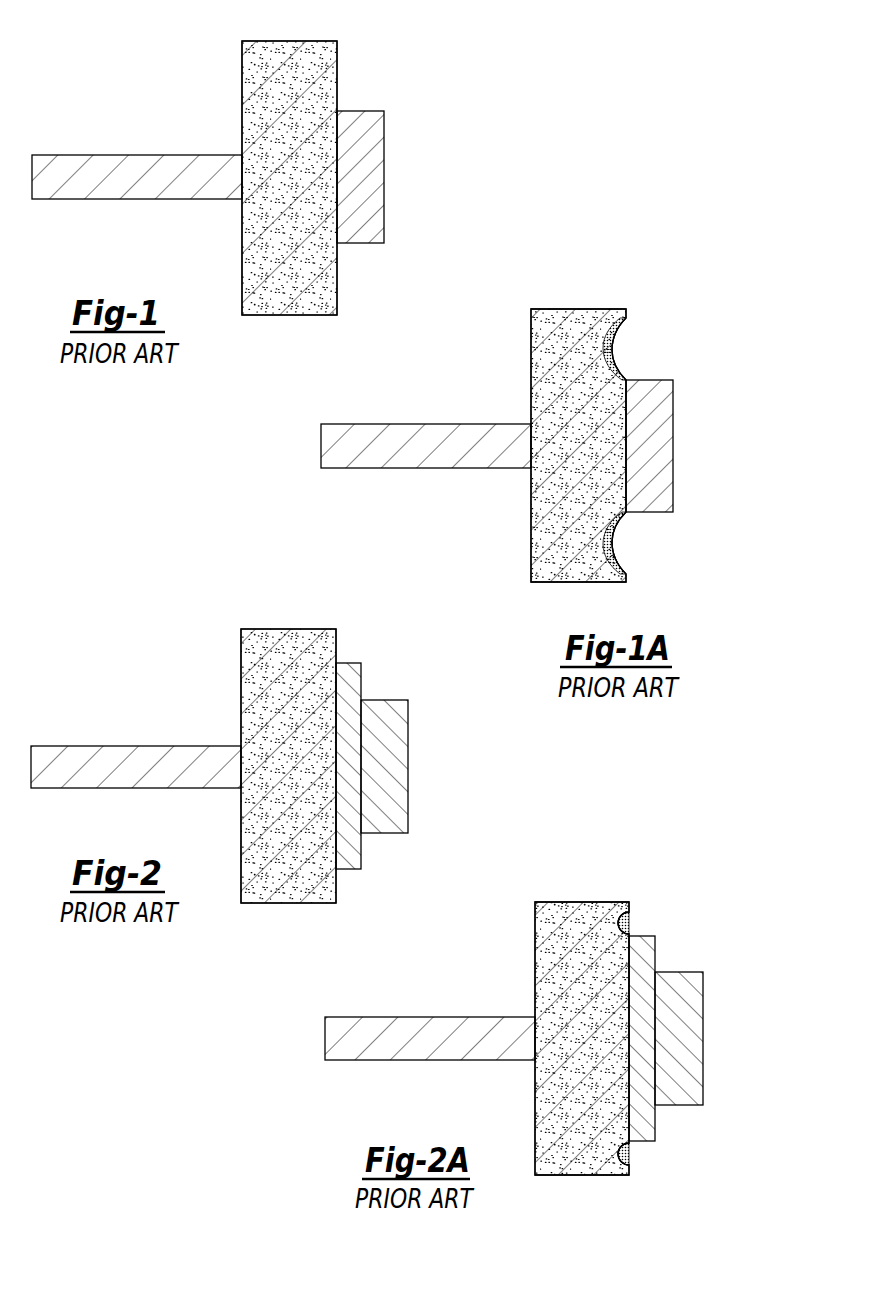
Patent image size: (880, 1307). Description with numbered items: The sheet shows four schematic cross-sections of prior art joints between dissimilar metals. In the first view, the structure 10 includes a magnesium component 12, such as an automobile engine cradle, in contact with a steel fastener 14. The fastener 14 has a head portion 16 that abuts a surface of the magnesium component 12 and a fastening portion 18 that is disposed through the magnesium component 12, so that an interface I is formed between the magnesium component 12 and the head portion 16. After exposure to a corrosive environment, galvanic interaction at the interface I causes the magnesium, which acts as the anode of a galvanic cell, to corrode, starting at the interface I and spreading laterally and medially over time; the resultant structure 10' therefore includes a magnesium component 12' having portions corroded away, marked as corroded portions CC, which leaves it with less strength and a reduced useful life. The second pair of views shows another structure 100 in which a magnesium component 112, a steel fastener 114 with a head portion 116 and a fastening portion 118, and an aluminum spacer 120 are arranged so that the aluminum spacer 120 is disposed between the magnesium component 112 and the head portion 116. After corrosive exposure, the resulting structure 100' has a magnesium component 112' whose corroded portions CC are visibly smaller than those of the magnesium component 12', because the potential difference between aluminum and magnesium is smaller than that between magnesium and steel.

In FIG. 1, the prior art structure 10 is at (250, 159).
In FIG. 1A, the resultant structure 10' is at (534, 429).
In FIG. 1, the magnesium component 12 is at (262, 178).
In FIG. 1A, the corroded magnesium component 12' is at (552, 445).
In FIG. 1, the steel fastener 14 is at (322, 178).
In FIG. 1A, the steel fastener 14 is at (612, 453).
In FIG. 1, the head portion 16 is at (372, 173).
In FIG. 1A, the head portion 16 is at (663, 440).
In FIG. 1, the fastening portion 18 is at (75, 192).
In FIG. 1A, the fastening portion 18 is at (362, 457).
In FIG. 1, the interface I is at (325, 178).
In FIG. 1A, the interface I is at (612, 446).
In FIG. 2A, the interface I is at (612, 1035).
In FIG. 1A, the corroded portions CC is at (651, 590).
In FIG. 2A, the corroded portions CC is at (630, 913).
In FIG. 2, the prior art structure with aluminum spacer 100 is at (264, 740).
In FIG. 2A, the corroded spacer structure 100' is at (555, 1034).
In FIG. 2, the magnesium component 112 is at (258, 766).
In FIG. 2A, the corroded magnesium component 112' is at (551, 1038).
In FIG. 2, the steel fastener 114 is at (339, 764).
In FIG. 2A, the steel fastener 114 is at (630, 1045).
In FIG. 2, the head portion 116 is at (398, 768).
In FIG. 2A, the head portion 116 is at (692, 1038).
In FIG. 2, the fastening portion 118 is at (72, 778).
In FIG. 2A, the fastening portion 118 is at (365, 1050).
In FIG. 2, the aluminum spacer 120 is at (351, 663).
In FIG. 2A, the aluminum spacer 120 is at (658, 937).